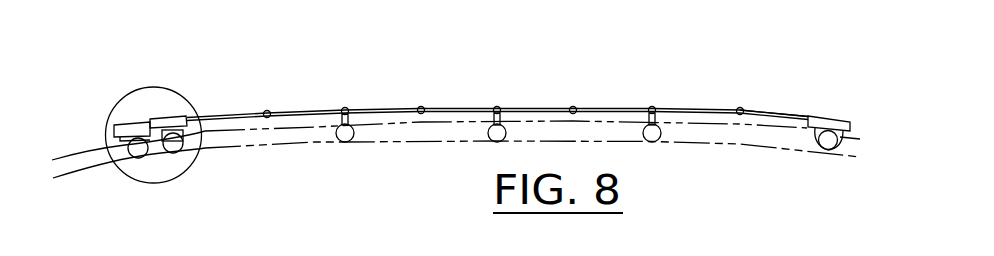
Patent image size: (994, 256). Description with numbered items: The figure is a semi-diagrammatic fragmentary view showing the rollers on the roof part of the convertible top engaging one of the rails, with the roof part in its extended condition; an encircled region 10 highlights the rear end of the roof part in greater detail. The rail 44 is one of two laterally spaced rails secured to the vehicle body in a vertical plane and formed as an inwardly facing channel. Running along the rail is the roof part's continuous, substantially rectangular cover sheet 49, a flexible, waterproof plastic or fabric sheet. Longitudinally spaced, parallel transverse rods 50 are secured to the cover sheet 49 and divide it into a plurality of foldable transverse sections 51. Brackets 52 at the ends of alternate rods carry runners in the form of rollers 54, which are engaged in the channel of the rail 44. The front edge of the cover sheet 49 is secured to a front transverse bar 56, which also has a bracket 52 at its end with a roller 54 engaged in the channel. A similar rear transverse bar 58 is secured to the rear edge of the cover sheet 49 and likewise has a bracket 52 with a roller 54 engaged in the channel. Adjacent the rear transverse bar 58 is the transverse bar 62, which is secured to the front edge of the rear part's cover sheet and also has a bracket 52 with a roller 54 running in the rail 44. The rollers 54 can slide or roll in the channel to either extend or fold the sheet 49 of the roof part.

The trolley assembly 10 is at (178, 93).
The rail 44 is at (774, 160).
The cover sheet 49 is at (760, 110).
The transverse rods 50 is at (267, 111).
The foldable transverse sections 51 is at (397, 108).
The brackets 52 is at (347, 113).
The rollers 54 is at (172, 150).
The front transverse bar 56 is at (830, 118).
The rear transverse bar 58 is at (158, 116).
The transverse bar 62 is at (120, 123).